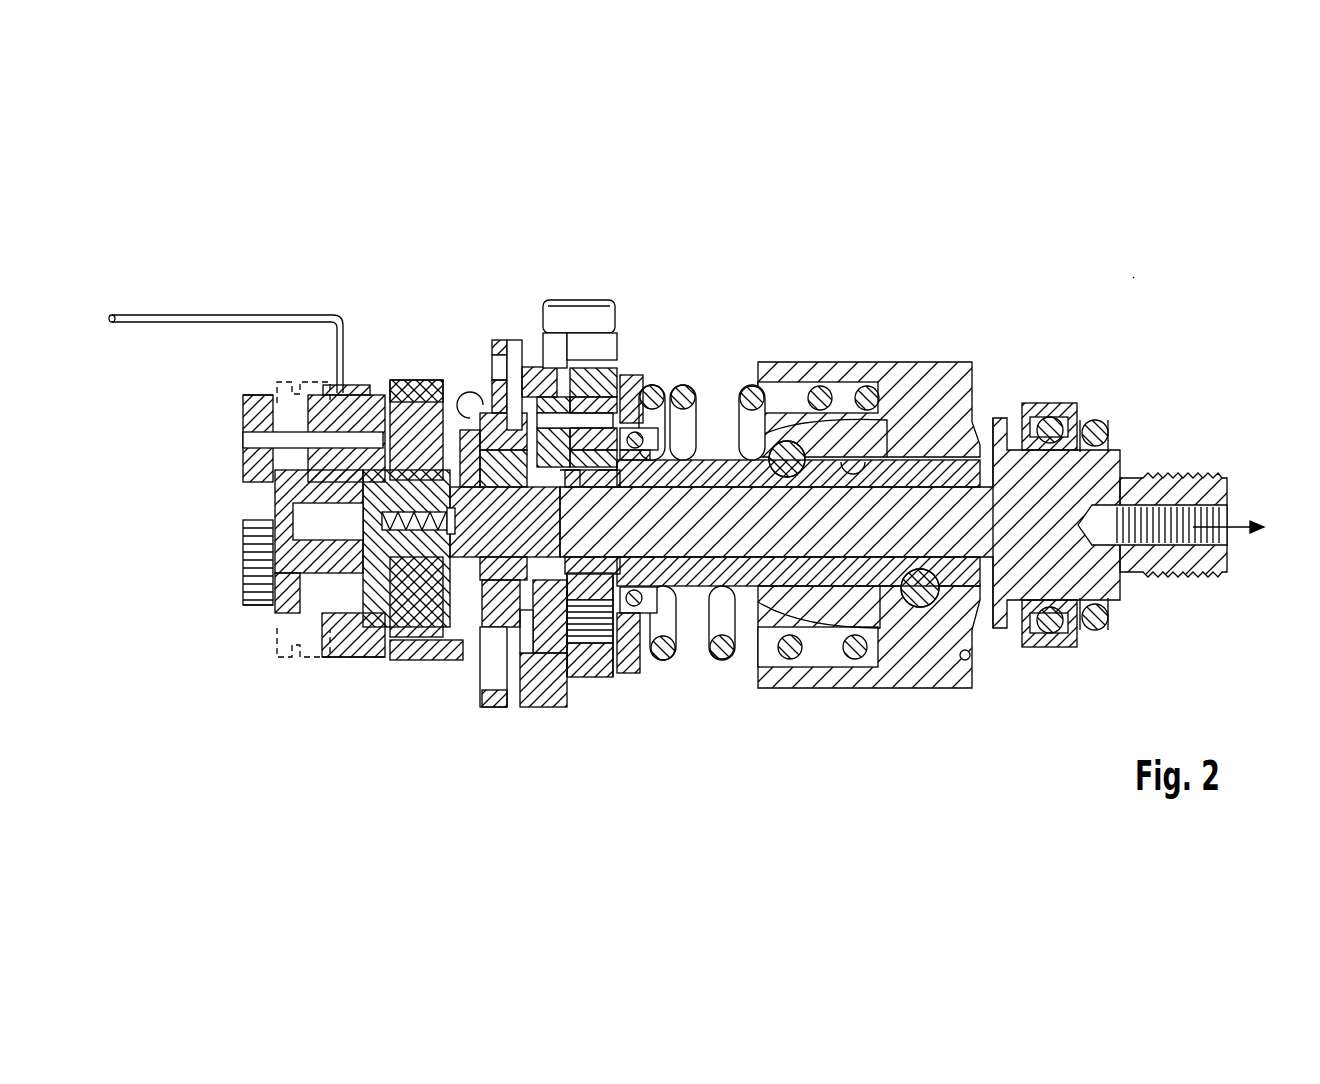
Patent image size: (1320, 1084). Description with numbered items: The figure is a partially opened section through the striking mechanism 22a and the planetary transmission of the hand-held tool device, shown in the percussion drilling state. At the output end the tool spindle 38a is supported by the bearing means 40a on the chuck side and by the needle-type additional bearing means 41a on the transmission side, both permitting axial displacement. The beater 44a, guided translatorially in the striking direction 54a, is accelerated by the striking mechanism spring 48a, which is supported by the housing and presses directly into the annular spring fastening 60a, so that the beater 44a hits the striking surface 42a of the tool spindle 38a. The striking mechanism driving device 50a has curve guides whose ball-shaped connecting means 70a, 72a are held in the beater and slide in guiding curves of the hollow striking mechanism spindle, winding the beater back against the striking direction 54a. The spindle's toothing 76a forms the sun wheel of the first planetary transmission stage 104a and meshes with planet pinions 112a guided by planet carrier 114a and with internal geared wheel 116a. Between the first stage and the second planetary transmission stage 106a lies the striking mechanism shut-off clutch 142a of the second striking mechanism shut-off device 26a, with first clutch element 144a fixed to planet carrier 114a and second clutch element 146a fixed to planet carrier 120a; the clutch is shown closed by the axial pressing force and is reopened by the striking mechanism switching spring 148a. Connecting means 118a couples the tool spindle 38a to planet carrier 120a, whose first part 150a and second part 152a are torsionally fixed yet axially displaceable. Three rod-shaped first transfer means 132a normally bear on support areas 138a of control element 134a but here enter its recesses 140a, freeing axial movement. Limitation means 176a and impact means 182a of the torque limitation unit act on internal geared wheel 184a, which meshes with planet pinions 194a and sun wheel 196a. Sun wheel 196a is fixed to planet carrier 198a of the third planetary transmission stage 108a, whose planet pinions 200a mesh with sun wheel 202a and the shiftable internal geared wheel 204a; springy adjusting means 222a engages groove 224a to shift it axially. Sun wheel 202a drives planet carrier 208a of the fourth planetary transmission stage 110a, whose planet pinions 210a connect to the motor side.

The striking mechanism 22a is at (1133, 277).
The second striking mechanism shut-off device 26a is at (573, 645).
The tool spindle 38a is at (1108, 475).
The bearing means 40a is at (1058, 392).
The additional bearing means 41a is at (677, 472).
The striking surface 42a is at (973, 440).
The beater 44a is at (912, 383).
The striking mechanism spring 48a is at (746, 397).
The striking mechanism driving device 50a is at (832, 430).
The striking direction 54a is at (1237, 535).
The spring fastening 60a is at (747, 658).
The connecting means 70a is at (918, 592).
The connecting means 72a is at (788, 455).
The toothing 76a is at (595, 583).
The first planetary transmission stage 104a is at (600, 695).
The second planetary transmission stage 106a is at (422, 680).
The third planetary transmission stage 108a is at (336, 680).
The fourth planetary transmission stage 110a is at (258, 680).
The planet pinions 112a is at (614, 400).
The planet carrier 114a is at (560, 410).
The internal geared wheel 116a is at (607, 367).
The connecting means 118a is at (585, 498).
The planet carrier 120a is at (553, 592).
The first transfer means 132a is at (695, 590).
The control element 134a is at (515, 362).
The support areas 138a is at (567, 357).
The recesses 140a is at (580, 355).
The striking mechanism shut-off clutch 142a is at (607, 678).
The first clutch element 144a is at (570, 475).
The second clutch element 146a is at (583, 500).
The striking mechanism switching spring 148a is at (300, 517).
The first part 150a is at (455, 470).
The second part 152a is at (433, 400).
The limitation means 176a is at (497, 592).
The impact means 182a is at (498, 412).
The internal geared wheel 184a is at (440, 652).
The planet pinions 194a is at (415, 478).
The sun wheel 196a is at (385, 380).
The planet carrier 198a is at (372, 613).
The planet pinions 200a is at (343, 607).
The sun wheel 202a is at (320, 563).
The internal geared wheel 204a is at (287, 380).
The planet carrier 208a is at (280, 610).
The planet pinions 210a is at (247, 590).
The adjusting means 222a is at (195, 315).
The groove 224a is at (308, 395).